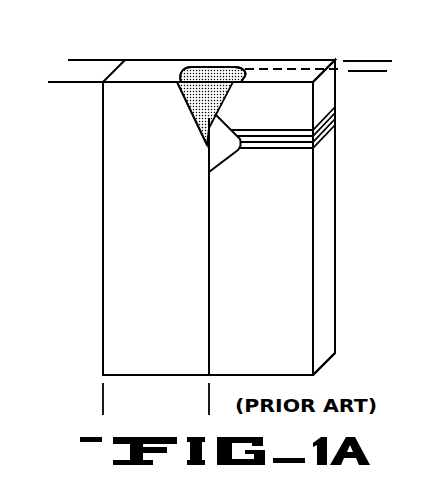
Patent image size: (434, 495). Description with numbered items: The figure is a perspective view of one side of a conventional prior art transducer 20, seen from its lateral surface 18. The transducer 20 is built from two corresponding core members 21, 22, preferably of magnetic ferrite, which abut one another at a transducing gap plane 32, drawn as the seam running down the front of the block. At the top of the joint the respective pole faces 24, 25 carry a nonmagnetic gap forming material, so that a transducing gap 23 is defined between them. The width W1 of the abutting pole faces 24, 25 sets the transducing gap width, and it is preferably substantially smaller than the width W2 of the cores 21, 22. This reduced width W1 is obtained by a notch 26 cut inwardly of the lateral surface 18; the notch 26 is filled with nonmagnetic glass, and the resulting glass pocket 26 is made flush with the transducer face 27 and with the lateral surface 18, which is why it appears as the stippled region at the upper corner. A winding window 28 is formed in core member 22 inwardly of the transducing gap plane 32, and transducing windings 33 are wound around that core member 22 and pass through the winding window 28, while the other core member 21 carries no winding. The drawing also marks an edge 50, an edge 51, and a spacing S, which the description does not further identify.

The lateral surface 18 is at (279, 309).
The transducer 20 is at (161, 50).
The core member 21 is at (115, 219).
The core member 22 is at (303, 221).
The transducing gap 23 is at (224, 66).
The pole face 24 is at (218, 67).
The pole face 25 is at (228, 64).
The notch 26 is at (197, 100).
The transducer face 27 is at (150, 70).
The winding window 28 is at (218, 158).
The transducing gap plane 32 is at (209, 300).
The transducing windings 33 is at (280, 148).
The bottom edge 50 is at (327, 362).
The side edge 51 is at (103, 257).
The width of abutting pole faces W1 is at (353, 92).
The width of cores W2 is at (107, 35).
The spacing S is at (208, 406).